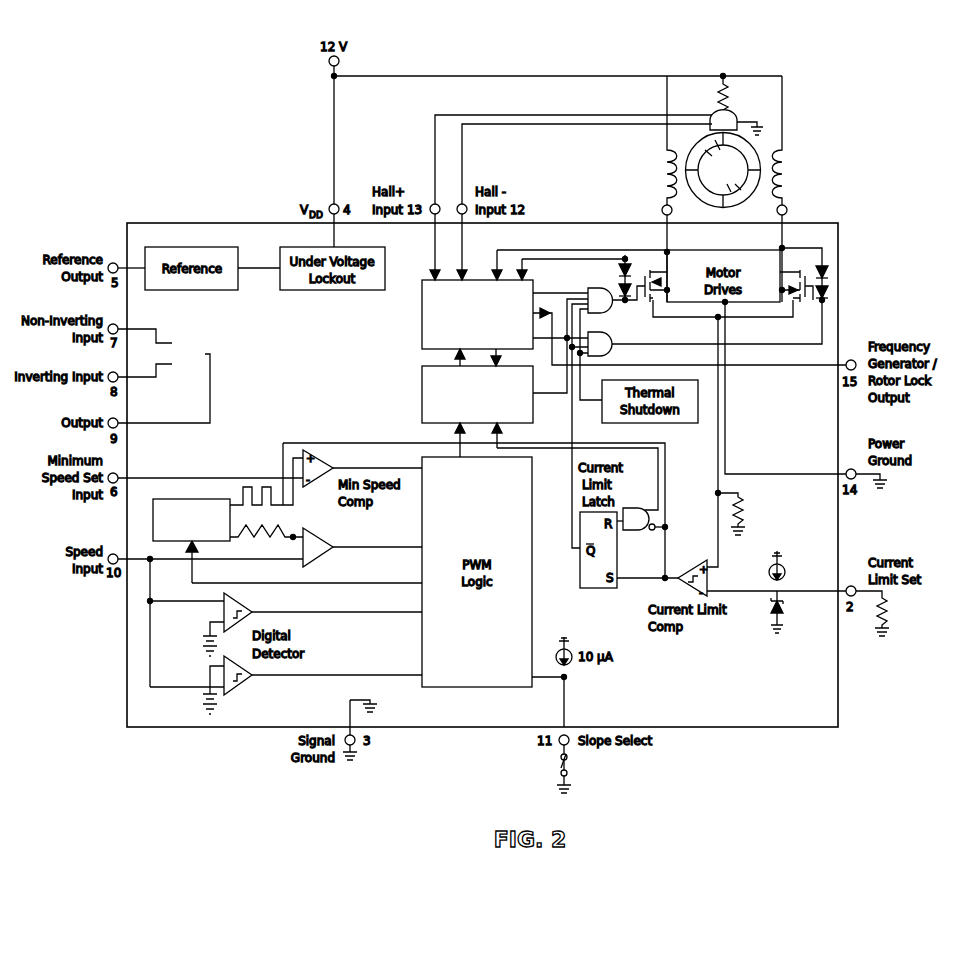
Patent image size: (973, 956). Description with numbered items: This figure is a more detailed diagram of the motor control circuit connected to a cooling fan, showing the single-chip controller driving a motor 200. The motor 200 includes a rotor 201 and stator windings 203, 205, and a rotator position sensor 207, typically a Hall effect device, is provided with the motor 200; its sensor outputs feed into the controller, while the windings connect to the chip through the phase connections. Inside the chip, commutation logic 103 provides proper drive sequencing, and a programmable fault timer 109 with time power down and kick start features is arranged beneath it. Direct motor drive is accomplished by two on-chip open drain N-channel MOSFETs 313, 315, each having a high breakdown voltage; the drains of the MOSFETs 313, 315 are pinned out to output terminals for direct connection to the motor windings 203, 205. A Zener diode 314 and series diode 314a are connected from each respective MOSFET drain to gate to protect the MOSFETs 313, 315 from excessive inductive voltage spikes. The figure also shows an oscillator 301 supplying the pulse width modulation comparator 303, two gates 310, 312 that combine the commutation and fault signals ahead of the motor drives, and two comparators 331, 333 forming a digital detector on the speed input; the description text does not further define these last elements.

The commutation block 103 is at (432, 317).
The fault timer / power down / kick start block 109 is at (432, 393).
The motor assembly 200 is at (802, 133).
The motor 201 is at (730, 152).
The motor coil phase 2 203 is at (785, 176).
The motor coil phase 1 205 is at (668, 173).
The Hall sensor 207 is at (717, 112).
The oscillator 301 is at (197, 500).
The PWM comparator 303 is at (293, 537).
The AND gate 310 is at (603, 296).
The AND gate 312 is at (613, 343).
The drive transistor 313 is at (806, 268).
The clamp diodes 314 is at (826, 283).
The clamp diodes 314a is at (615, 262).
The drive transistor 315 is at (643, 270).
The digital detector comparator 331 is at (223, 614).
The digital detector comparator 333 is at (222, 690).